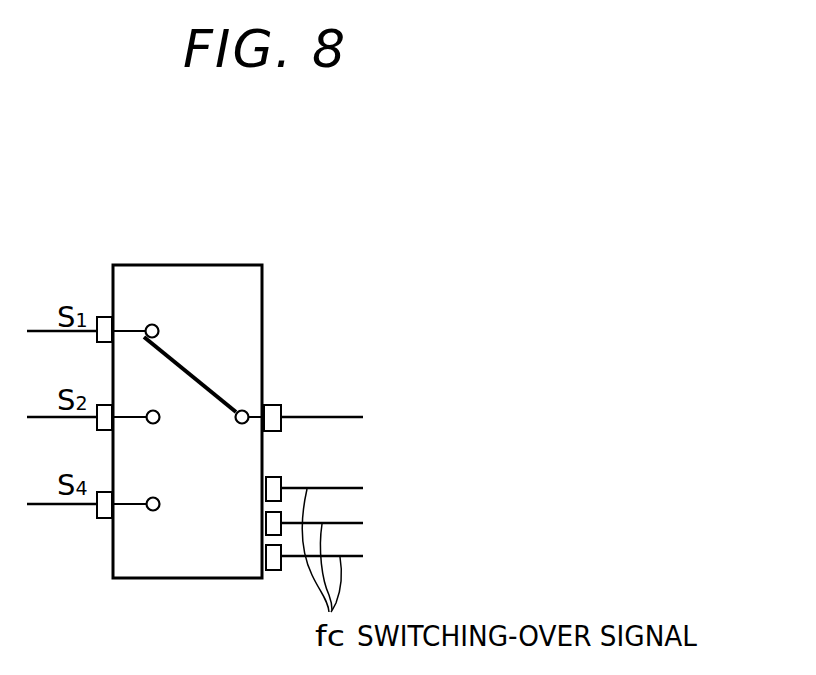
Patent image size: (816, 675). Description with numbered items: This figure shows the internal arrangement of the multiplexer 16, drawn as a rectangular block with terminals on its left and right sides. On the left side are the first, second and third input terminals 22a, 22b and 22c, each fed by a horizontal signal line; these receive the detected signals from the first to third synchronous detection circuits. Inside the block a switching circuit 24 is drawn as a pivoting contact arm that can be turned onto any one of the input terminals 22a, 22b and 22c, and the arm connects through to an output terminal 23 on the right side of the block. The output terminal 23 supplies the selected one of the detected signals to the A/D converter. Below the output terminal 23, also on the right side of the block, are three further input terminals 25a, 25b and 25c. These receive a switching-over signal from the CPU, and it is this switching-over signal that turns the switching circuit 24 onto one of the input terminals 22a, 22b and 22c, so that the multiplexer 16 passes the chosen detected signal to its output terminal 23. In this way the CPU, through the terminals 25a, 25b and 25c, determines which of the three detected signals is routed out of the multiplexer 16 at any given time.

The multiplexer 16 is at (171, 264).
The first input terminal 22a is at (103, 317).
The second input terminal 22b is at (105, 407).
The third input terminal 22c is at (103, 492).
The output terminal 23 is at (282, 409).
The switching circuit 24 is at (212, 389).
The input terminal 25a is at (282, 481).
The input terminal 25b is at (266, 522).
The input terminal 25c is at (275, 558).